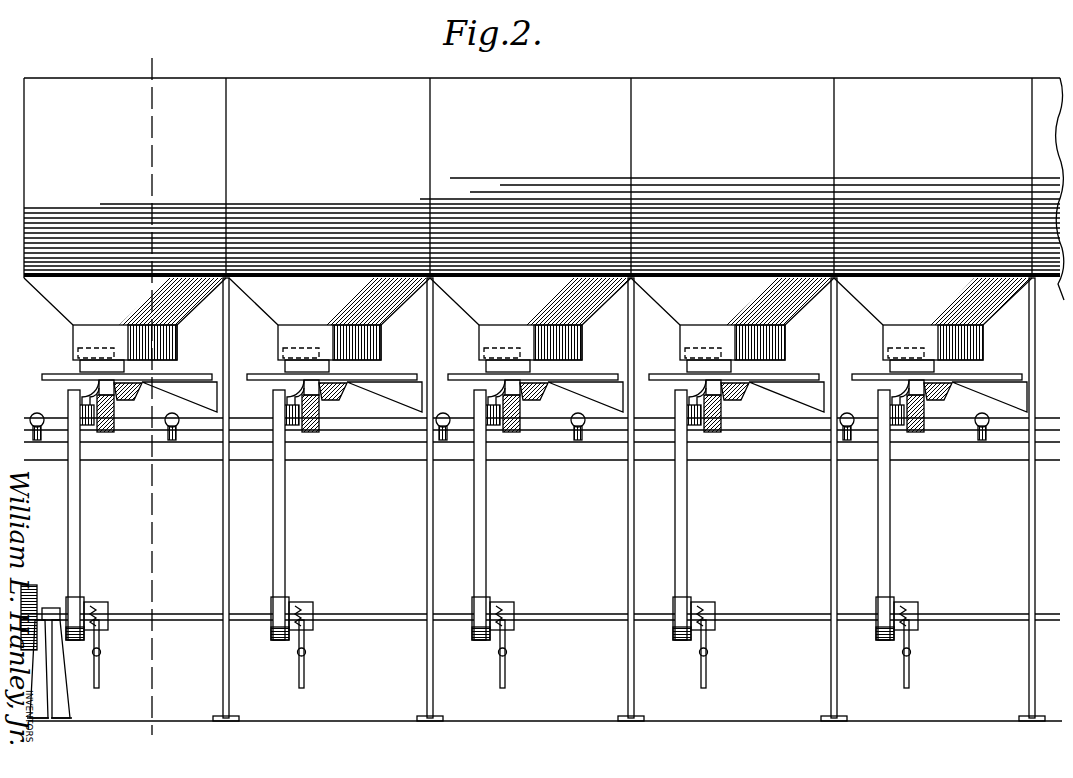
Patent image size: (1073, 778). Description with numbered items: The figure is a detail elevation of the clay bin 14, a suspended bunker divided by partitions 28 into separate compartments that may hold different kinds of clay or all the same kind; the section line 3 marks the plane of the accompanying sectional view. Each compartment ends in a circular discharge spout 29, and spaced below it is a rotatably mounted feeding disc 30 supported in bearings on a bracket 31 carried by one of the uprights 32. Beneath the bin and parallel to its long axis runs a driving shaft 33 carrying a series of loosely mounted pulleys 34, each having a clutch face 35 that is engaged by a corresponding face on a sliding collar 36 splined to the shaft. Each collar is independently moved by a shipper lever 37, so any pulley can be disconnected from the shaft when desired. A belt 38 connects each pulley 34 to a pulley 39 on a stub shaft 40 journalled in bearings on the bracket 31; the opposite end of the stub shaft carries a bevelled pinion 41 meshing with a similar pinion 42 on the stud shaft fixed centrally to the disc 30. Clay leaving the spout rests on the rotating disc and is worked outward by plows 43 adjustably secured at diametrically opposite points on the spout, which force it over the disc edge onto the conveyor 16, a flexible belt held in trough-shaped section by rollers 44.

The section line 3 is at (152, 394).
The clay bin 14 is at (354, 95).
The conveyor 16 is at (364, 428).
The partition 28 is at (224, 150).
The discharge spout 29 is at (112, 335).
The feeding disc 30 is at (57, 374).
The bracket 31 is at (185, 377).
The upright 32 is at (222, 494).
The driving shaft 33 is at (180, 614).
The pulley 34 is at (86, 600).
The clutch face 35 is at (106, 638).
The sliding collar 36 is at (110, 604).
The shipper lever 37 is at (100, 670).
The belt 38 is at (82, 533).
The pulley 39 is at (78, 408).
The stub shaft 40 is at (88, 435).
The bevelled pinion 41 is at (110, 433).
The pinion 42 is at (130, 400).
The plow 43 is at (500, 366).
The roller 44 is at (34, 420).